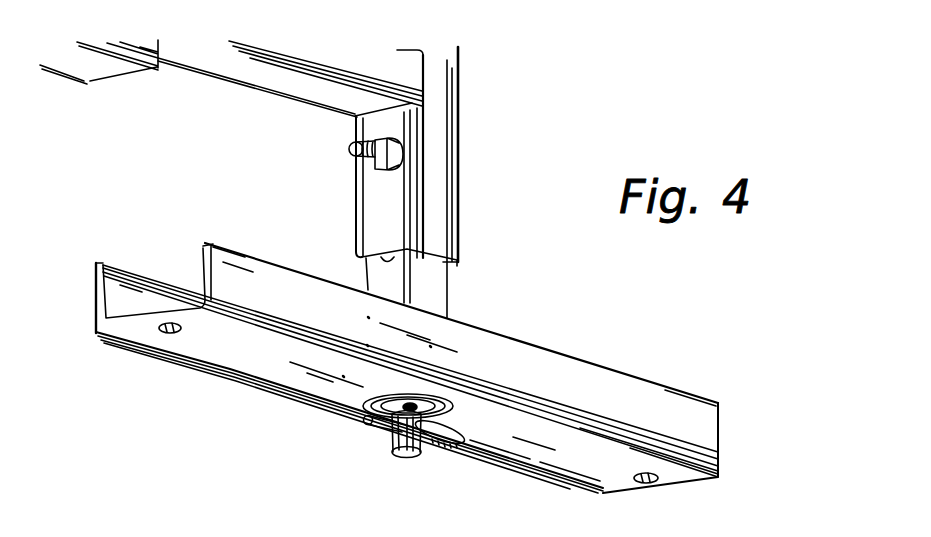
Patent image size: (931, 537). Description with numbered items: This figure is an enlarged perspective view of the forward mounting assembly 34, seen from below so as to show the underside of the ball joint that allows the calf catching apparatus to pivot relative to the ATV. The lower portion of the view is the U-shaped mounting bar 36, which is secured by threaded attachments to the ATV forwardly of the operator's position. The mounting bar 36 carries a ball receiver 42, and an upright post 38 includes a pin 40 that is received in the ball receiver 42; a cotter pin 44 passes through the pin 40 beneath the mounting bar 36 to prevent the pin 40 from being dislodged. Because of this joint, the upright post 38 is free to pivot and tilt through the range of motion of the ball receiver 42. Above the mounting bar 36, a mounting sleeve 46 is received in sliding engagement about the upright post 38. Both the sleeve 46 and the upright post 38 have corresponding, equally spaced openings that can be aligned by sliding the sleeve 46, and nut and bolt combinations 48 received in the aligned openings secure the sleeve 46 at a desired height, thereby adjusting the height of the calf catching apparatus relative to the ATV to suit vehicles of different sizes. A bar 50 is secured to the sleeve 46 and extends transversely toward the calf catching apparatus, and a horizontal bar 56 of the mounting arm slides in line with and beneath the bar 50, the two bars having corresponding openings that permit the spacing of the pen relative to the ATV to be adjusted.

The forward mounting assembly 34 is at (190, 403).
The U-shaped mounting bar 36 is at (707, 427).
The upright post 38 is at (447, 287).
The pin 40 is at (410, 460).
The ball receiver 42 is at (420, 403).
The cotter pin 44 is at (378, 428).
The mounting sleeve 46 is at (445, 158).
The nut and bolt combinations 48 is at (353, 152).
The bar 50 is at (273, 78).
The horizontal bar 56 is at (98, 62).